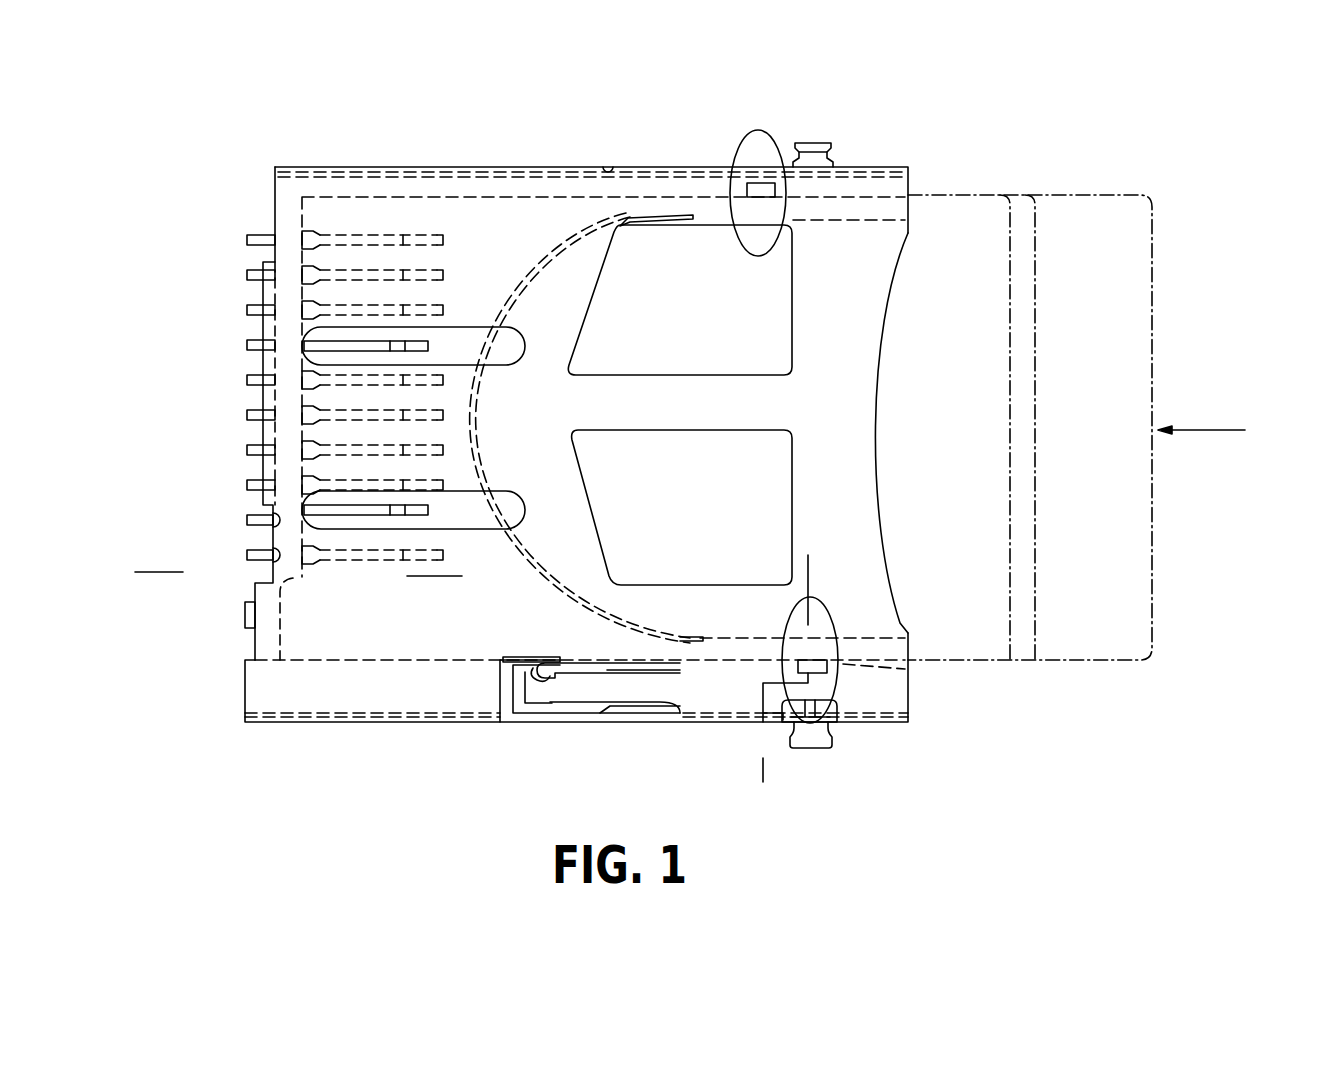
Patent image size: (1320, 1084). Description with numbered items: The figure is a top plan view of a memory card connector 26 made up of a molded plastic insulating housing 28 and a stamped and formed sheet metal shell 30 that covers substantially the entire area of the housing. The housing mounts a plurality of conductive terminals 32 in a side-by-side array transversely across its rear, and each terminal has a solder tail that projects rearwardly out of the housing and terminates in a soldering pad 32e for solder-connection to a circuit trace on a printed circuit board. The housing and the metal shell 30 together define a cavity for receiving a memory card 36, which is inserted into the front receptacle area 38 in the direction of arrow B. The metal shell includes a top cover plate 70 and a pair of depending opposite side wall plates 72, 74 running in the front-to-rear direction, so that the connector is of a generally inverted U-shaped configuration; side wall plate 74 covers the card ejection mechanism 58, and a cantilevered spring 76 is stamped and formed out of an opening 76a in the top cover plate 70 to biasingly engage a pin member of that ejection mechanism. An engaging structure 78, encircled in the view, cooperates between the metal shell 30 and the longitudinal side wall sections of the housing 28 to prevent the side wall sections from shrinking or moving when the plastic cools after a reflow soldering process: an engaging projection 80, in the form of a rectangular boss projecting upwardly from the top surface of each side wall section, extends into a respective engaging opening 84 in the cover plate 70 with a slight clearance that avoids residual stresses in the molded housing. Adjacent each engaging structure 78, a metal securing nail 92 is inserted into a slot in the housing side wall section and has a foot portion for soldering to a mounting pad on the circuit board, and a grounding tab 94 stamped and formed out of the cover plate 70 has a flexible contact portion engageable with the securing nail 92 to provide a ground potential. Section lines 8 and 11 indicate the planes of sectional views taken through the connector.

The memory card connector 26 is at (262, 155).
The insulating housing 28 is at (360, 688).
The metal shell 30 is at (452, 222).
The conductive terminals 32 is at (243, 443).
The soldering pad 32e is at (250, 560).
The memory card 36 is at (1052, 185).
The front receptacle area 38 is at (870, 360).
The card ejection mechanism 58 is at (587, 708).
The top cover plate 70 is at (494, 220).
The side wall plate 72 is at (640, 167).
The side wall plate 74 is at (455, 725).
The cantilevered spring 76 is at (587, 688).
The opening 76a is at (540, 678).
The engaging structure 78 is at (770, 128).
The engaging projection 80 is at (760, 183).
The engaging opening 84 is at (775, 190).
The metal securing nail 92 is at (822, 140).
The grounding tab 94 is at (796, 703).
The section line 8- 8 is at (808, 565).
The section line 11- 11 is at (143, 572).
The arrow B is at (1198, 425).